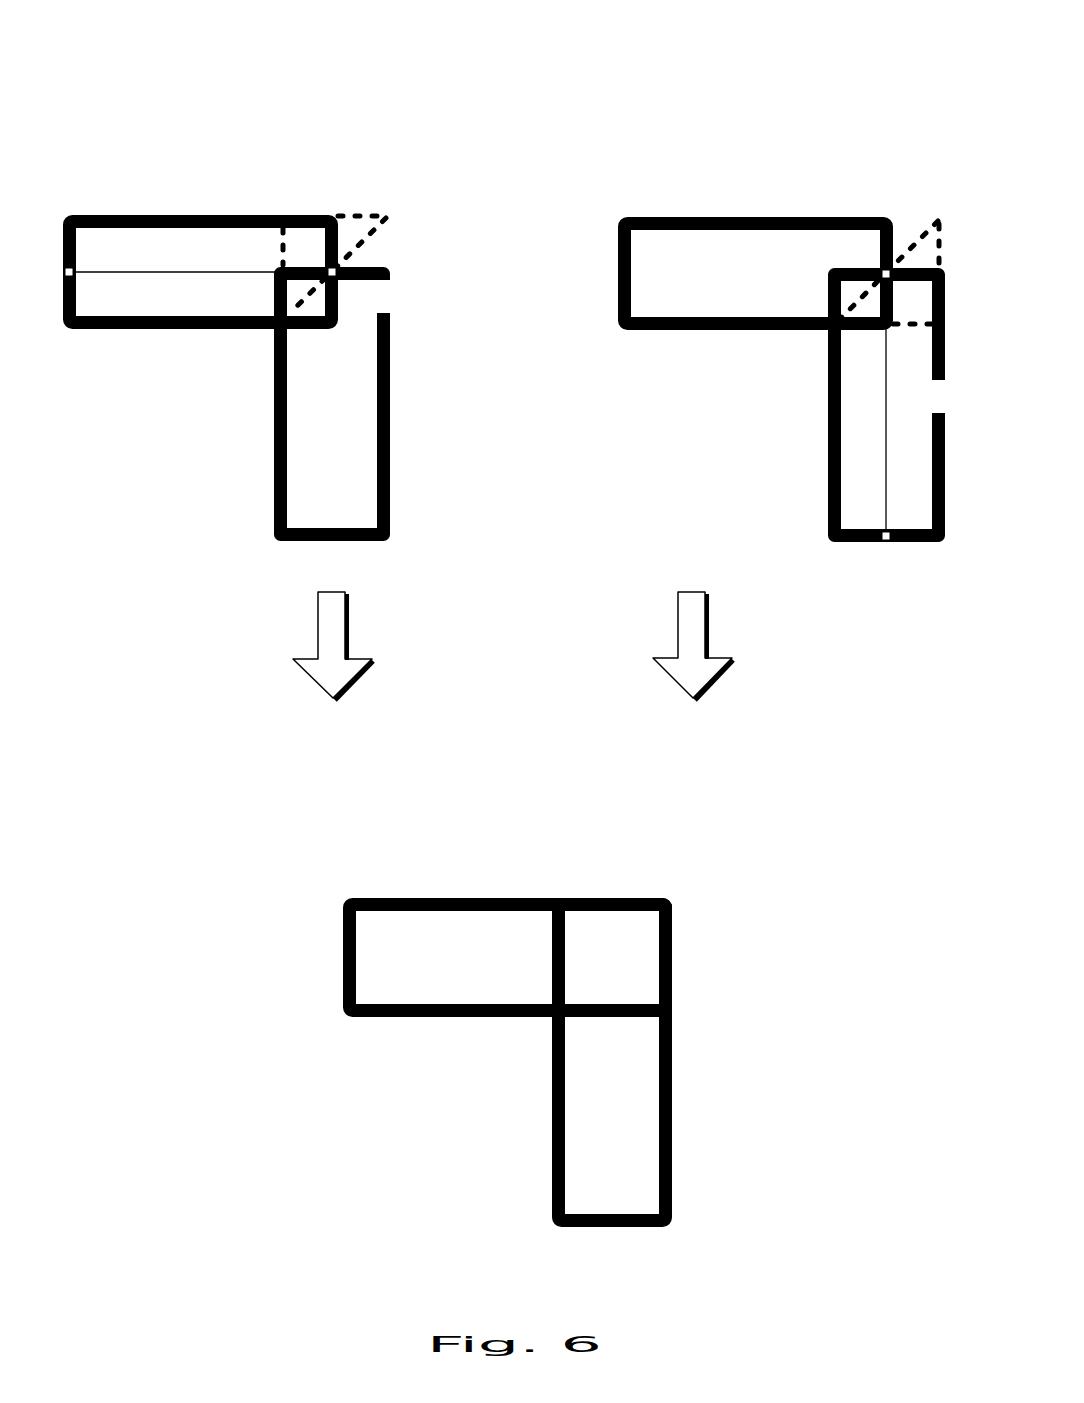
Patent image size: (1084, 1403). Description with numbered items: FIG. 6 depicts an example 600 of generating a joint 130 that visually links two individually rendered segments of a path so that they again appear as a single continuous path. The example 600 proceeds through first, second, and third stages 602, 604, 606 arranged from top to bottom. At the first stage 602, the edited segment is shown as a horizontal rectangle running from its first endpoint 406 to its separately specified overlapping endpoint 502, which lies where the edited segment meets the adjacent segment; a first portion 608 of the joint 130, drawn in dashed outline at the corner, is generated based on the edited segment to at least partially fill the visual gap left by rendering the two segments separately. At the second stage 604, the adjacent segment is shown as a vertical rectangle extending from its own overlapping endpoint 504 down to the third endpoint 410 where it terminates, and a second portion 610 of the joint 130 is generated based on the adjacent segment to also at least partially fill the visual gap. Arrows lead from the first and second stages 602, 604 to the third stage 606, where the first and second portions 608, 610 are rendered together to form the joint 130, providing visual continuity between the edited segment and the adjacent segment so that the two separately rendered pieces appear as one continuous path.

The example of joint generation 600 is at (177, 73).
The first stage 602 is at (142, 175).
The second stage 604 is at (700, 175).
The third stage 606 is at (290, 822).
The first portion of the joint 608 is at (368, 213).
The second portion of the joint 610 is at (938, 219).
The first endpoint 406 is at (76, 279).
The third endpoint 410 is at (889, 541).
The overlapping endpoint of the selected segment 502 is at (337, 278).
The overlapping endpoint of the adjacent segment 504 is at (882, 268).
The joint 130 is at (667, 898).